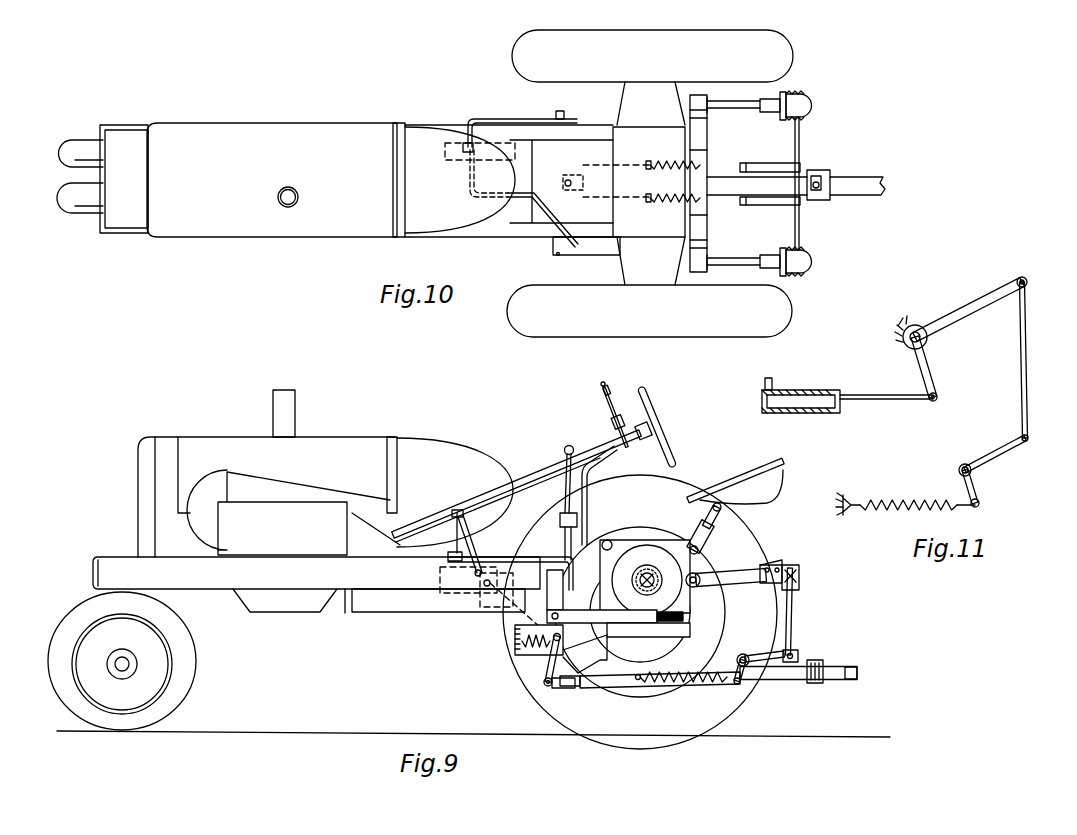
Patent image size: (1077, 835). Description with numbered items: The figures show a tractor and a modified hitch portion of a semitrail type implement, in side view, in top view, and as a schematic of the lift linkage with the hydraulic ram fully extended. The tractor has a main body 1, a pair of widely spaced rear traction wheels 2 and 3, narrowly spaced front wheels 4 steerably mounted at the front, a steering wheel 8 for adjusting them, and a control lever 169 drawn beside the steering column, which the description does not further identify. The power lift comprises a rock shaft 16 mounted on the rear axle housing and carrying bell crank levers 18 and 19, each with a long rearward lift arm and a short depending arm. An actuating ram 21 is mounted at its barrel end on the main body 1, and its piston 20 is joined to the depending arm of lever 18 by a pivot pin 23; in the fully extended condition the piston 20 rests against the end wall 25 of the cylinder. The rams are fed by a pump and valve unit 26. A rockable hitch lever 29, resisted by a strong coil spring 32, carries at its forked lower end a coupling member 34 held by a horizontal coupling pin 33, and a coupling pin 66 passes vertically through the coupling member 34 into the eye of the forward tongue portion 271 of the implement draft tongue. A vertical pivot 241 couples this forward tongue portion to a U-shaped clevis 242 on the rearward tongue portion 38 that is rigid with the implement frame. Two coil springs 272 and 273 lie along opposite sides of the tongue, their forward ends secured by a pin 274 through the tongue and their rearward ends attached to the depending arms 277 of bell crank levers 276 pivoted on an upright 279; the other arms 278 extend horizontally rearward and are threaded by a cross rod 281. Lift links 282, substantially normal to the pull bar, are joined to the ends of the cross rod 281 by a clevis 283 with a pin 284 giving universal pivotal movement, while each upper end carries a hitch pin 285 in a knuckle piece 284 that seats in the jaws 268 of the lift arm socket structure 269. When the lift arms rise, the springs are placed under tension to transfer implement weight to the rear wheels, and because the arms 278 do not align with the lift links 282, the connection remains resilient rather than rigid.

In FIG. 10, the main body 1 is at (366, 187).
In FIG. 9, the main body 1 is at (363, 473).
In FIG. 10, the rear traction wheel 2 is at (508, 316).
In FIG. 10, the rear traction wheel 3 is at (512, 40).
In FIG. 9, the rear traction wheel 3 is at (713, 737).
In FIG. 9, the front wheel 4 is at (194, 668).
In FIG. 9, the steering wheel 8 is at (673, 449).
In FIG. 11, the rock shaft 16 is at (918, 325).
In FIG. 9, the rock shaft 16 is at (696, 586).
In FIG. 10, the bell crank lever 18 is at (737, 266).
In FIG. 11, the bell crank lever 18 is at (976, 294).
In FIG. 9, the bell crank lever 18 is at (735, 570).
In FIG. 10, the bell crank lever 19 is at (733, 101).
In FIG. 11, the piston 20 is at (840, 393).
In FIG. 11, the actuating ram 21 is at (770, 413).
In FIG. 9, the actuating ram 21 is at (578, 610).
In FIG. 11, the pivot pin 23 is at (941, 397).
In FIG. 9, the pivot pin 23 is at (683, 617).
In FIG. 11, the end wall 25 is at (850, 403).
In FIG. 10, the pump and valve unit 26 is at (501, 143).
In FIG. 9, the pump and valve unit 26 is at (440, 581).
In FIG. 9, the hitch lever 29 is at (550, 654).
In FIG. 9, the coil spring 32 is at (521, 648).
In FIG. 9, the coupling pin 33 is at (550, 678).
In FIG. 9, the coupling member 34 is at (553, 690).
In FIG. 10, the rearward tongue portion 38 is at (874, 194).
In FIG. 9, the rearward tongue portion 38 is at (858, 672).
In FIG. 9, the coupling pin 66 is at (567, 690).
In FIG. 9, the control lever 169 is at (603, 387).
In FIG. 10, the vertical pivot 241 is at (835, 165).
In FIG. 9, the vertical pivot 241 is at (813, 686).
In FIG. 10, the U-shaped clevis 242 is at (836, 176).
In FIG. 9, the U-shaped clevis 242 is at (828, 681).
In FIG. 9, the jaws 268 is at (756, 604).
In FIG. 10, the lift arm socket structure 269 is at (813, 104).
In FIG. 9, the lift arm socket structure 269 is at (765, 560).
In FIG. 10, the forward tongue portion 271 is at (638, 154).
In FIG. 9, the forward tongue portion 271 is at (612, 686).
In FIG. 10, the coil spring 272 is at (717, 210).
In FIG. 11, the coil spring 272 is at (905, 500).
In FIG. 10, the coil spring 273 is at (712, 165).
In FIG. 10, the pin 274 is at (648, 201).
In FIG. 11, the pin 274 is at (855, 489).
In FIG. 9, the pin 274 is at (640, 676).
In FIG. 11, the bell crank lever 276 is at (970, 454).
In FIG. 9, the bell crank lever 276 is at (770, 636).
In FIG. 11, the depending arm 277 is at (980, 488).
In FIG. 9, the depending arm 277 is at (740, 684).
In FIG. 10, the arm 278 is at (762, 164).
In FIG. 11, the arm 278 is at (1003, 447).
In FIG. 9, the arm 278 is at (752, 640).
In FIG. 10, the upright 279 is at (742, 172).
In FIG. 9, the upright 279 is at (737, 657).
In FIG. 10, the cross rod 281 is at (800, 242).
In FIG. 11, the cross rod 281 is at (1028, 442).
In FIG. 9, the cross rod 281 is at (793, 661).
In FIG. 11, the lift link 282 is at (1022, 350).
In FIG. 9, the lift link 282 is at (796, 611).
In FIG. 9, the clevis 283 is at (797, 650).
In FIG. 9, the pin 284 is at (800, 584).
In FIG. 9, the hitch pin 285 is at (783, 570).